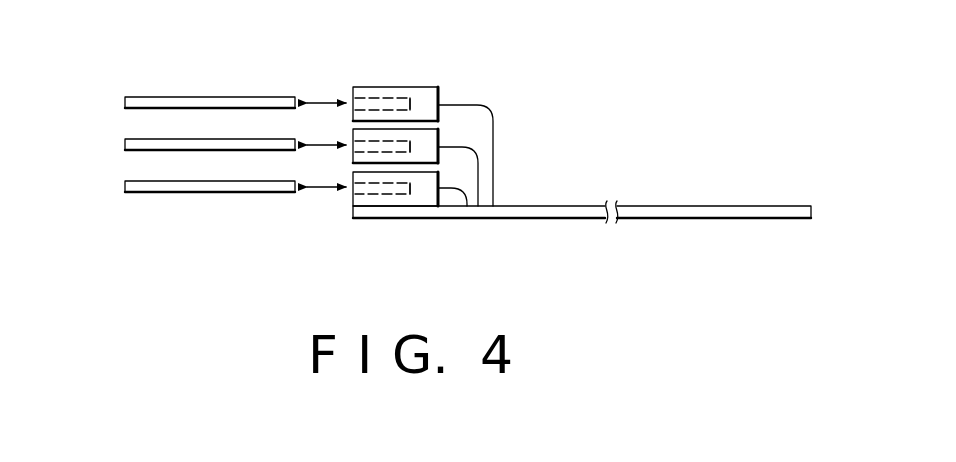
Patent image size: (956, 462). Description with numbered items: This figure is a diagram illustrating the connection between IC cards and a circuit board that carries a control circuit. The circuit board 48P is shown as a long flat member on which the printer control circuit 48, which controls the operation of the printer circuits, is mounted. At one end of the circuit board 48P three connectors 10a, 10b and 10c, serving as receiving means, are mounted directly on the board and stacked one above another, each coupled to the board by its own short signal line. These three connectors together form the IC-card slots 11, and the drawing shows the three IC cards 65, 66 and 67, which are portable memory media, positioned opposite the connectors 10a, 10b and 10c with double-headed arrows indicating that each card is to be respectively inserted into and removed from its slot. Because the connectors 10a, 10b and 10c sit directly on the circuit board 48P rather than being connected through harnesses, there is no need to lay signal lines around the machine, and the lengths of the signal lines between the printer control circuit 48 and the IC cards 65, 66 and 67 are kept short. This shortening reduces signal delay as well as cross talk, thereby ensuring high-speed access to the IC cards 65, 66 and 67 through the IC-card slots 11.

The IC-card slots 11 is at (435, 118).
The connector 10a is at (428, 87).
The connector 10b is at (440, 132).
The connector 10c is at (440, 174).
The printer control circuit 48 is at (696, 206).
The circuit board 48P is at (568, 219).
The IC card 65 is at (125, 103).
The IC card 66 is at (125, 145).
The IC card 67 is at (125, 186).